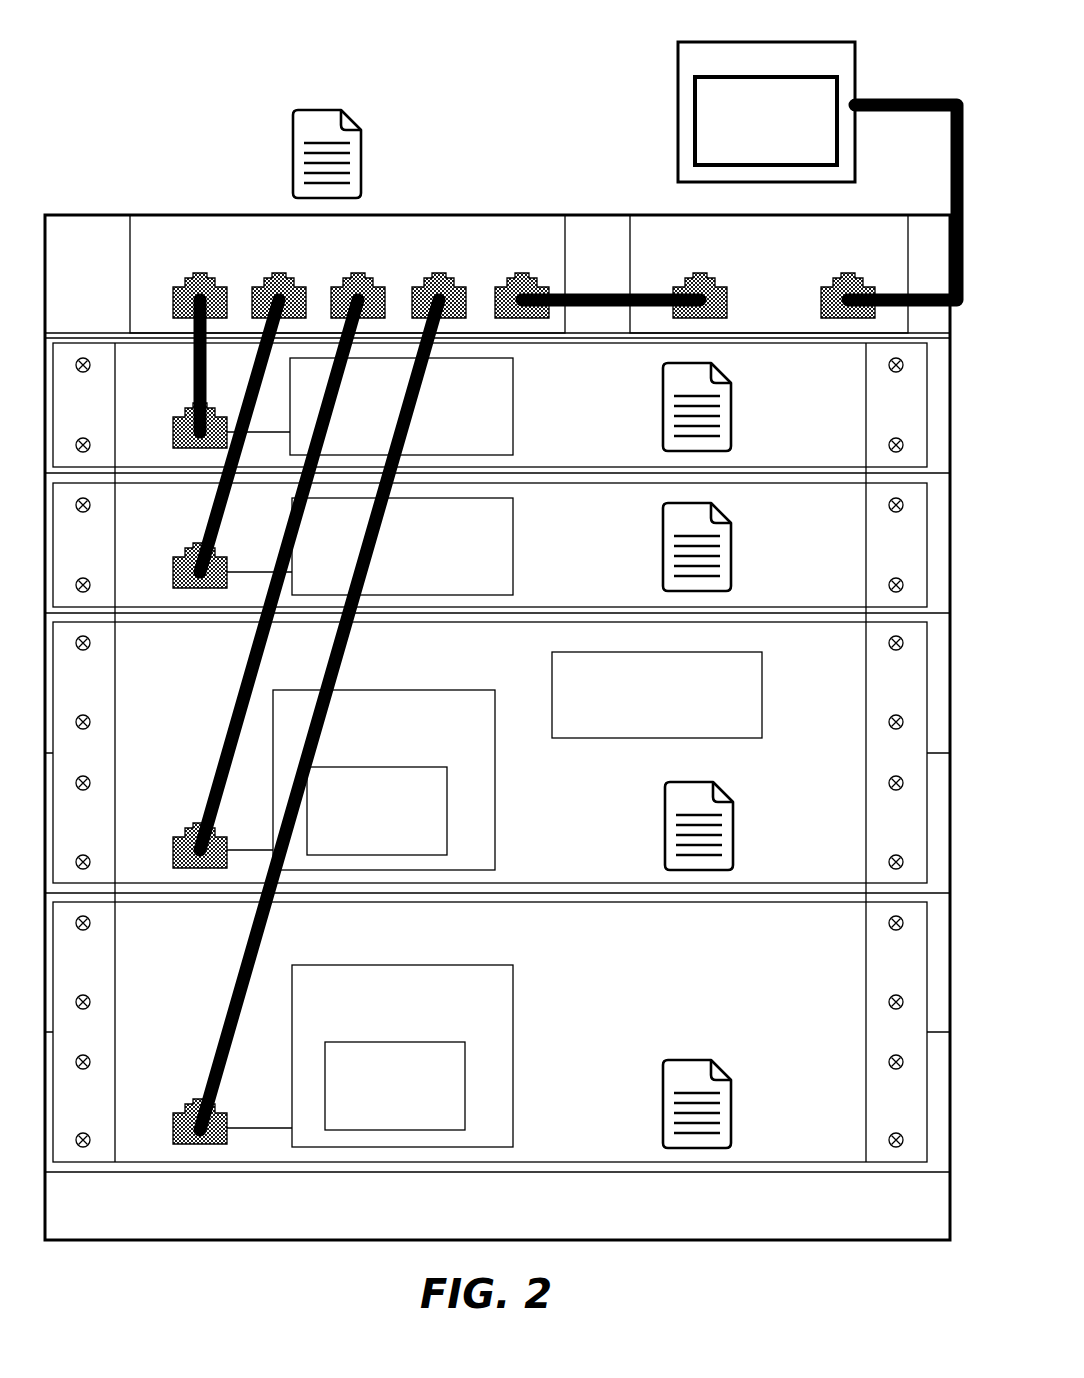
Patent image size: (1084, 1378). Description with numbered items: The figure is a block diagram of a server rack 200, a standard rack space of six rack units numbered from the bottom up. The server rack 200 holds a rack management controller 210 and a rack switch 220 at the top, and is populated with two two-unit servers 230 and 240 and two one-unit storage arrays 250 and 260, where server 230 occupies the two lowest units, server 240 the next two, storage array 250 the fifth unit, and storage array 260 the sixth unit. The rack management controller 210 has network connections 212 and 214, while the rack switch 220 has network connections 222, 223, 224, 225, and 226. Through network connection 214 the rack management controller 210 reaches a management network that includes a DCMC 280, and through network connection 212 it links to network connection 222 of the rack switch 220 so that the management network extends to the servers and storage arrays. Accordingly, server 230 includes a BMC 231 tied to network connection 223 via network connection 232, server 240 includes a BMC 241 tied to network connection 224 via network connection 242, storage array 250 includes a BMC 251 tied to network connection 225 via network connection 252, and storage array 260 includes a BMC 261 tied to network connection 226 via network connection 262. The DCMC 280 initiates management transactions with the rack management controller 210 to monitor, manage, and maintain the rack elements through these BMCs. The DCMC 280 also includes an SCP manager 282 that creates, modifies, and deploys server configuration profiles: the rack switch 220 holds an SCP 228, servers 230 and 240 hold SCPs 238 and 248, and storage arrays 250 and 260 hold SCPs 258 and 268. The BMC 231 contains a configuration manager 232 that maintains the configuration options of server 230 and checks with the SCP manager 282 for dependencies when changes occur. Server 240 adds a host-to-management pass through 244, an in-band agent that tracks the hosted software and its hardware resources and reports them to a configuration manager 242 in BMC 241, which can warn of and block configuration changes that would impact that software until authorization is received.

The server rack 200 is at (152, 1291).
The rack management controller 210 is at (593, 215).
The network connection 212 is at (678, 285).
The network connection 214 is at (826, 285).
The rack switch 220 is at (130, 215).
The network connection 222 is at (500, 285).
The network connection 223 is at (417, 285).
The network connection 224 is at (336, 285).
The network connection 225 is at (257, 285).
The network connection 226 is at (178, 285).
The SCP 228 is at (293, 120).
The server 230 is at (167, 934).
The BMC 231 is at (500, 986).
The network connection / configuration manager 232 is at (451, 1063).
The SCP 238 is at (663, 1070).
The server 240 is at (167, 654).
The BMC 241 is at (482, 710).
The network connection / configuration manager 242 is at (433, 788).
The host-to-management pass through 244 is at (747, 674).
The SCP 248 is at (665, 792).
The storage array 250 is at (167, 515).
The BMC 251 is at (500, 522).
The network connection 252 is at (178, 555).
The SCP 258 is at (663, 513).
The storage array 260 is at (167, 375).
The BMC 261 is at (500, 382).
The network connection 262 is at (178, 415).
The SCP 268 is at (663, 373).
The DCMC 280 is at (680, 42).
The SCP manager 282 is at (822, 99).